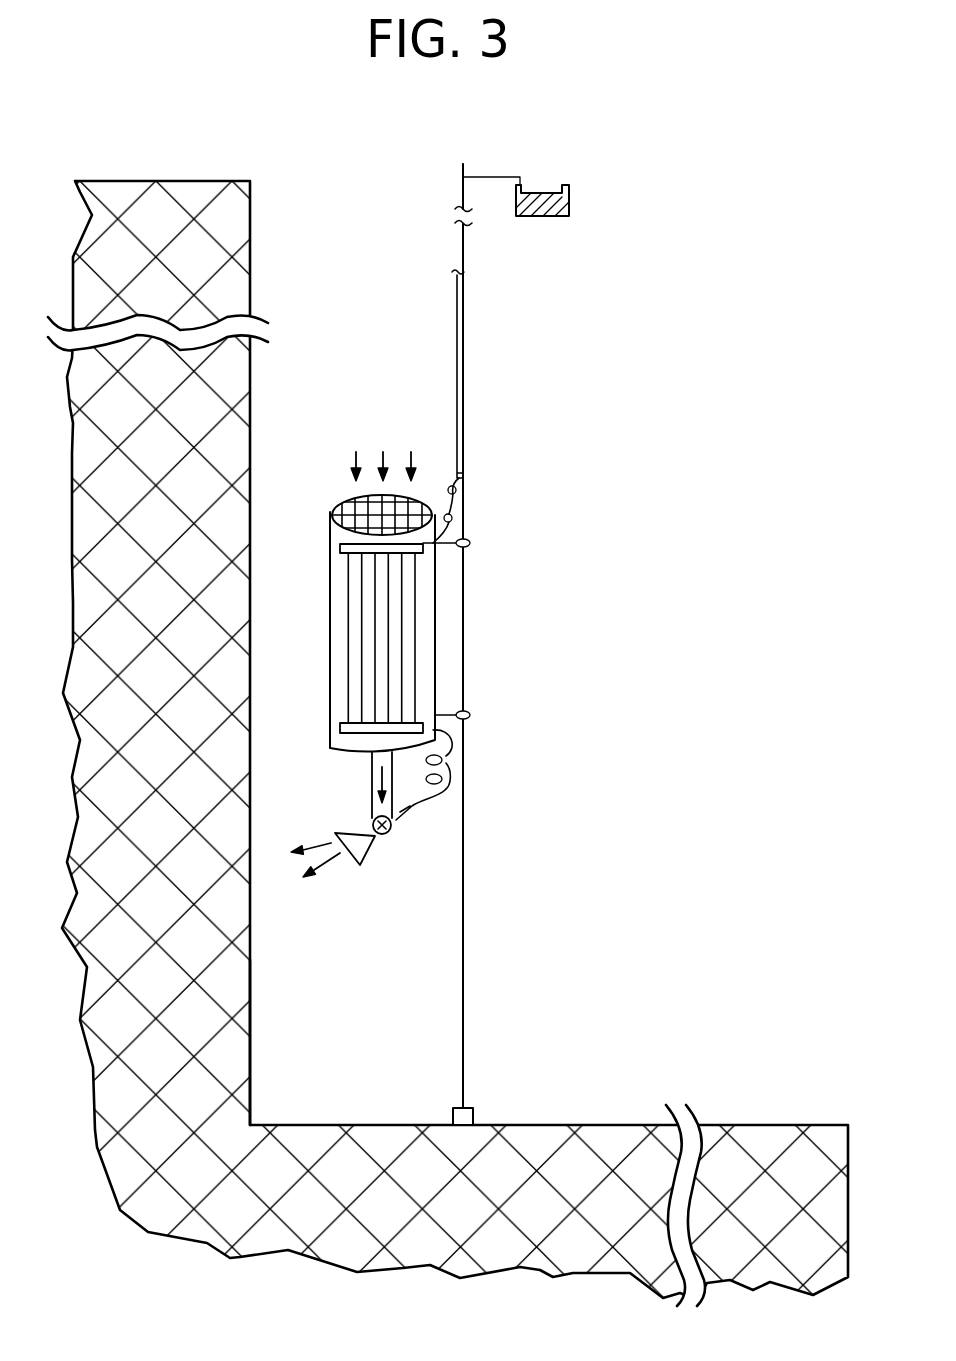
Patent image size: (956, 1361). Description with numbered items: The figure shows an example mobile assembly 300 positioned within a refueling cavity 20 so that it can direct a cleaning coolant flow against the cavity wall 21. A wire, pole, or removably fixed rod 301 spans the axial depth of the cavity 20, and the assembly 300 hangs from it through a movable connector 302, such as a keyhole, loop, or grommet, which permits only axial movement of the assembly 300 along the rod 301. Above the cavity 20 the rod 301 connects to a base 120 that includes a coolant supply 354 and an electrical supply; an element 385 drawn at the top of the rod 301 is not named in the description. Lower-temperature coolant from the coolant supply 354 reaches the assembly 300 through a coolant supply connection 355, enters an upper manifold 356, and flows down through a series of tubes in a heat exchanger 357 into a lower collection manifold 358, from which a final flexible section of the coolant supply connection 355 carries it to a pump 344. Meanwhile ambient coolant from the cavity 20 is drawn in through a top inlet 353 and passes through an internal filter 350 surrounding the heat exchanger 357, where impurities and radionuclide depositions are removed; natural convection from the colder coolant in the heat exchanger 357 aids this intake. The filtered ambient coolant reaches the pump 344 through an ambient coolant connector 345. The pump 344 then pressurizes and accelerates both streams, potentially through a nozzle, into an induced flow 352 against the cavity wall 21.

The base 120 is at (406, 166).
The mobile assembly 300 is at (329, 354).
The refueling cavity 20 is at (724, 849).
The cavity wall 21 is at (262, 1042).
The rod 301 is at (481, 960).
The movable connector 302 is at (466, 710).
The anchor mount 385 is at (547, 216).
The coolant supply 354 is at (470, 322).
The top inlet 353 is at (321, 499).
The coolant supply connection 355 is at (460, 498).
The upper manifold 356 is at (423, 552).
The heat exchanger 357 is at (402, 624).
The internal filter 350 is at (338, 650).
The lower collection manifold 358 is at (345, 728).
The ambient coolant connector 345 is at (370, 788).
The pump 344 is at (386, 836).
The induced flow 352 is at (339, 881).